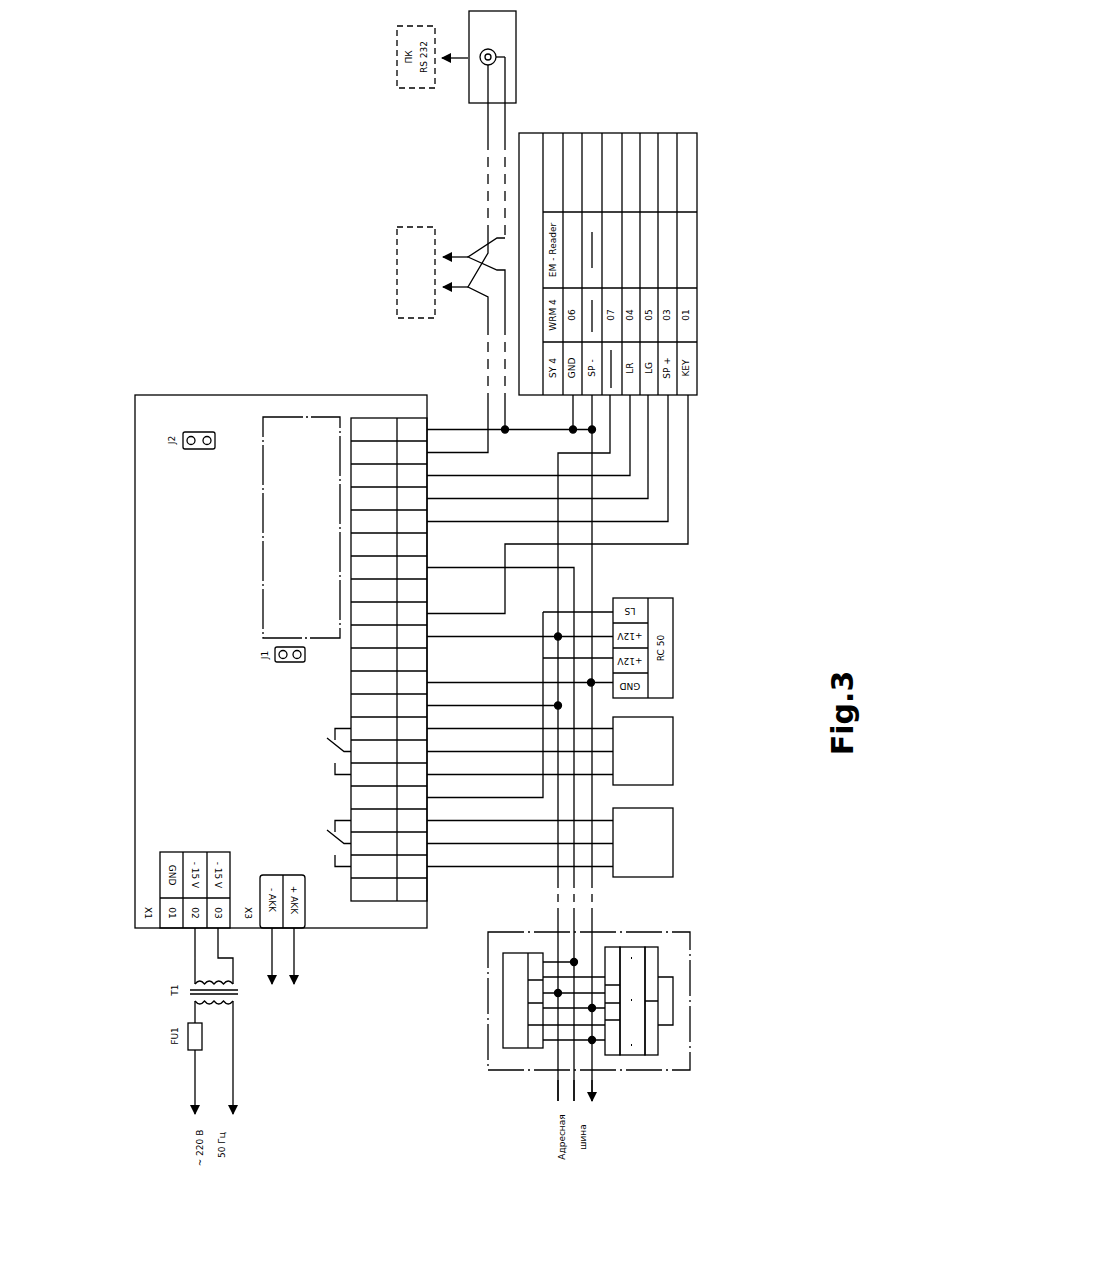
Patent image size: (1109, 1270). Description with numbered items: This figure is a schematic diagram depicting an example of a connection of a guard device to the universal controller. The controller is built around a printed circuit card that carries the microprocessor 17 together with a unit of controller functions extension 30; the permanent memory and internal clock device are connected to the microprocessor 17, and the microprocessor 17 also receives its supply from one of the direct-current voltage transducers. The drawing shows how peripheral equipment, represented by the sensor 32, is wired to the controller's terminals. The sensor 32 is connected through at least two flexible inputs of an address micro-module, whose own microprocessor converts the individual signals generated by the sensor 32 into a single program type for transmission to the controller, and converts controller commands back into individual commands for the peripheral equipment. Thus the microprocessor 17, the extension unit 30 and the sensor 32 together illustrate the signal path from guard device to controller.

The unit of controller functions extension 30 is at (282, 432).
The microprocessor 17 is at (367, 415).
The sensor 32 is at (512, 1038).